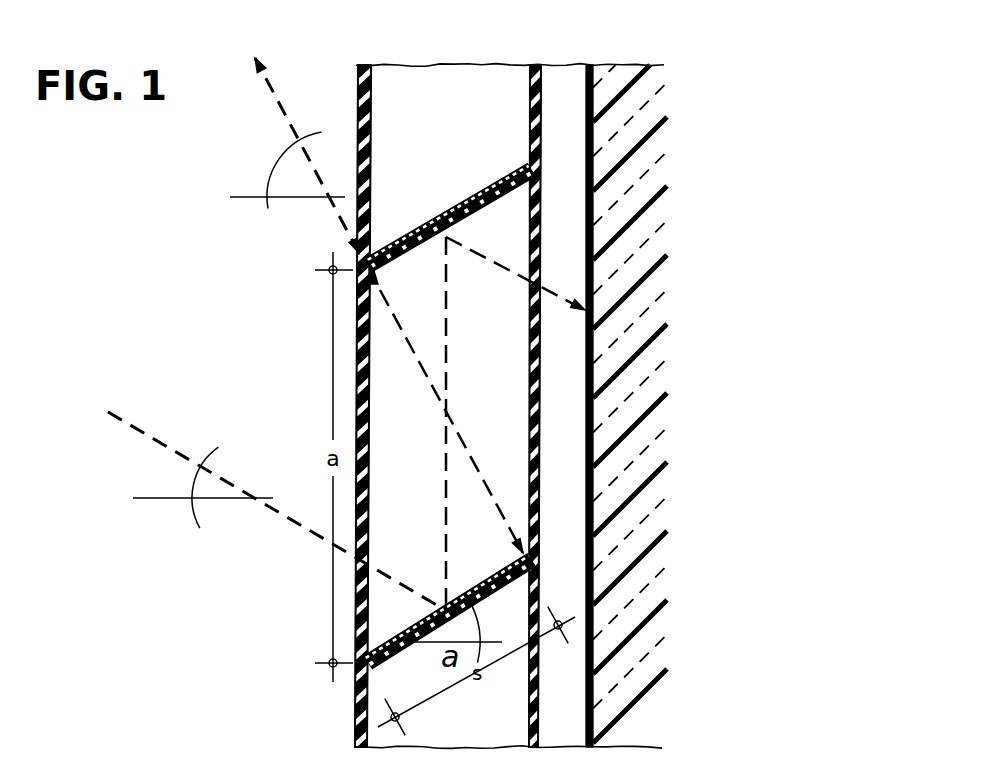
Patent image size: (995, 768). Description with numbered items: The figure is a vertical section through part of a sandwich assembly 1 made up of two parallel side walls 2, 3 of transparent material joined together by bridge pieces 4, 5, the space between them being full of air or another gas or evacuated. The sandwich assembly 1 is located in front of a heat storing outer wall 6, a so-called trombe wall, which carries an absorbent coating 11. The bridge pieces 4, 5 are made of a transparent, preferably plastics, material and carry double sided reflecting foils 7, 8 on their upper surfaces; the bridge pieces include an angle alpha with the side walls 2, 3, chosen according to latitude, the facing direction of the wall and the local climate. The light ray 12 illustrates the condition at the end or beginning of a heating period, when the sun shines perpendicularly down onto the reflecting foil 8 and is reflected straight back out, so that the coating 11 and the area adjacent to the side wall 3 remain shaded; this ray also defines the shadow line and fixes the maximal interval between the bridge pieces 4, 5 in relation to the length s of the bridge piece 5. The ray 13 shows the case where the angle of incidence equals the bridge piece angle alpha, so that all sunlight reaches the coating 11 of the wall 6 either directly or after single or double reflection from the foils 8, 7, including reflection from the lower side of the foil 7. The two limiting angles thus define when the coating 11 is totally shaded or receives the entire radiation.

The sandwich assembly 1 is at (488, 74).
The side wall 2 is at (380, 73).
The side wall 3 is at (546, 76).
The bridge piece 4 is at (406, 256).
The bridge piece 5 is at (376, 663).
The heat storing outer wall 6 is at (633, 100).
The double sided reflecting foil 7 is at (436, 212).
The double sided reflecting foil 8 is at (488, 567).
The absorbent coating 11 is at (586, 90).
The light ray 12 is at (284, 101).
The ray 13 is at (156, 440).